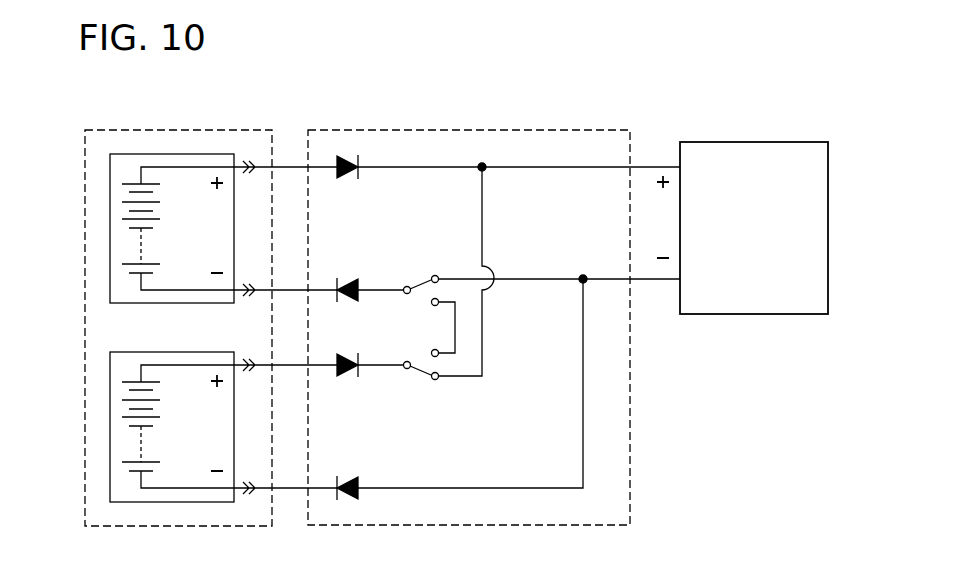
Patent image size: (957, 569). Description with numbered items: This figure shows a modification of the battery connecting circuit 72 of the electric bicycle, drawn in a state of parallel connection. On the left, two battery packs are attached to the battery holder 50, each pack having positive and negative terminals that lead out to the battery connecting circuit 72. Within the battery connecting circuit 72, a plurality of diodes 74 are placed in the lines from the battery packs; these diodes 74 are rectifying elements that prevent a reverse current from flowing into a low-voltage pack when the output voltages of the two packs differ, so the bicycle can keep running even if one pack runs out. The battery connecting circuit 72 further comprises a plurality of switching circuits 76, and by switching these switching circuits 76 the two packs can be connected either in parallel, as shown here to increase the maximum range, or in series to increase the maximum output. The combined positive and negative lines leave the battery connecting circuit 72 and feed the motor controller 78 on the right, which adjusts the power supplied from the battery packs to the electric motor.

The battery holder 50 is at (184, 130).
The battery connecting circuit 72 is at (538, 130).
The diode 74 is at (345, 157).
The switching circuit 76 is at (420, 276).
The motor controller 78 is at (768, 314).